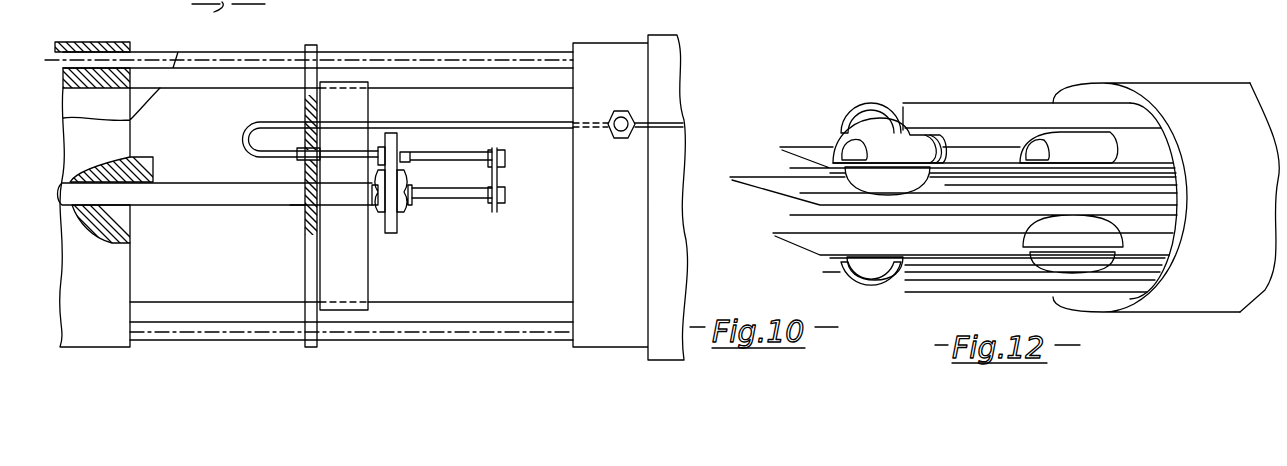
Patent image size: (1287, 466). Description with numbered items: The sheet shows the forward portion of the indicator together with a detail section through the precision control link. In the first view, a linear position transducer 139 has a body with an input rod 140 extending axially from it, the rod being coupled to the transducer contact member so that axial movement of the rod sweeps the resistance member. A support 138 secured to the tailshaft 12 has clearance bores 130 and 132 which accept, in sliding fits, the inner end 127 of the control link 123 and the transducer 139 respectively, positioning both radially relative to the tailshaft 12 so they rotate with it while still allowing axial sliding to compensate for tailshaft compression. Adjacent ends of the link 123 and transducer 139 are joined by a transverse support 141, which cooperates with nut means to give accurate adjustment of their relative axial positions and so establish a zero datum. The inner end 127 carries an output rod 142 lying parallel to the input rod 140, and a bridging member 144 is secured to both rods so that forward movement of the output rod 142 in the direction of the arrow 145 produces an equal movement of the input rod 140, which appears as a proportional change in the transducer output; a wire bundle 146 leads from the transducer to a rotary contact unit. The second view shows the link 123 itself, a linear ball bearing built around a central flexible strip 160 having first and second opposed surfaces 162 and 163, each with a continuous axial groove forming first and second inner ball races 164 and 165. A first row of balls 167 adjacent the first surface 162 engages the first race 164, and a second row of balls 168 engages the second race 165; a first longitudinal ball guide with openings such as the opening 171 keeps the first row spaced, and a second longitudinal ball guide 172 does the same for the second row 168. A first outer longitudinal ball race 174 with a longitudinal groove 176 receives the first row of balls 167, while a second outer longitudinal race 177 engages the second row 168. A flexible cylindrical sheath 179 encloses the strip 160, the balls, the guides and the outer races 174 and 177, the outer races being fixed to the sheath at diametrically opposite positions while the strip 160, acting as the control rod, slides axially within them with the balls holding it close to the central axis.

In FIG. 10, the tailshaft 12 is at (85, 145).
In FIG. 10, the control link 123 is at (232, 201).
In FIG. 12, the control link 123 is at (1086, 56).
In FIG. 10, the inner end of the link 127 is at (410, 206).
In FIG. 10, the clearance bore 130 is at (298, 205).
In FIG. 10, the clearance bore 132 is at (300, 162).
In FIG. 10, the support 138 is at (309, 267).
In FIG. 10, the linear position transducer 139 is at (356, 144).
In FIG. 10, the input rod 140 is at (443, 157).
In FIG. 10, the transverse support 141 is at (392, 233).
In FIG. 10, the output rod 142 is at (424, 203).
In FIG. 10, the bridging member 144 is at (498, 178).
In FIG. 10, the arrow 145 is at (549, 289).
In FIG. 10, the wire bundle 146 is at (447, 126).
In FIG. 12, the central flexible strip 160 is at (743, 150).
In FIG. 12, the first surface 162 is at (790, 178).
In FIG. 12, the second surface 163 is at (797, 206).
In FIG. 12, the first inner ball race 164 is at (840, 192).
In FIG. 12, the second inner ball race 165 is at (758, 193).
In FIG. 12, the first row of balls 167 is at (829, 137).
In FIG. 12, the second row of balls 168 is at (832, 266).
In FIG. 12, the opening 171 is at (922, 129).
In FIG. 12, the second longitudinal ball guide 172 is at (776, 235).
In FIG. 12, the first outer longitudinal ball race 174 is at (1015, 80).
In FIG. 12, the longitudinal groove 176 is at (863, 117).
In FIG. 12, the second outer longitudinal race 177 is at (893, 290).
In FIG. 12, the flexible cylindrical sheath 179 is at (1180, 96).